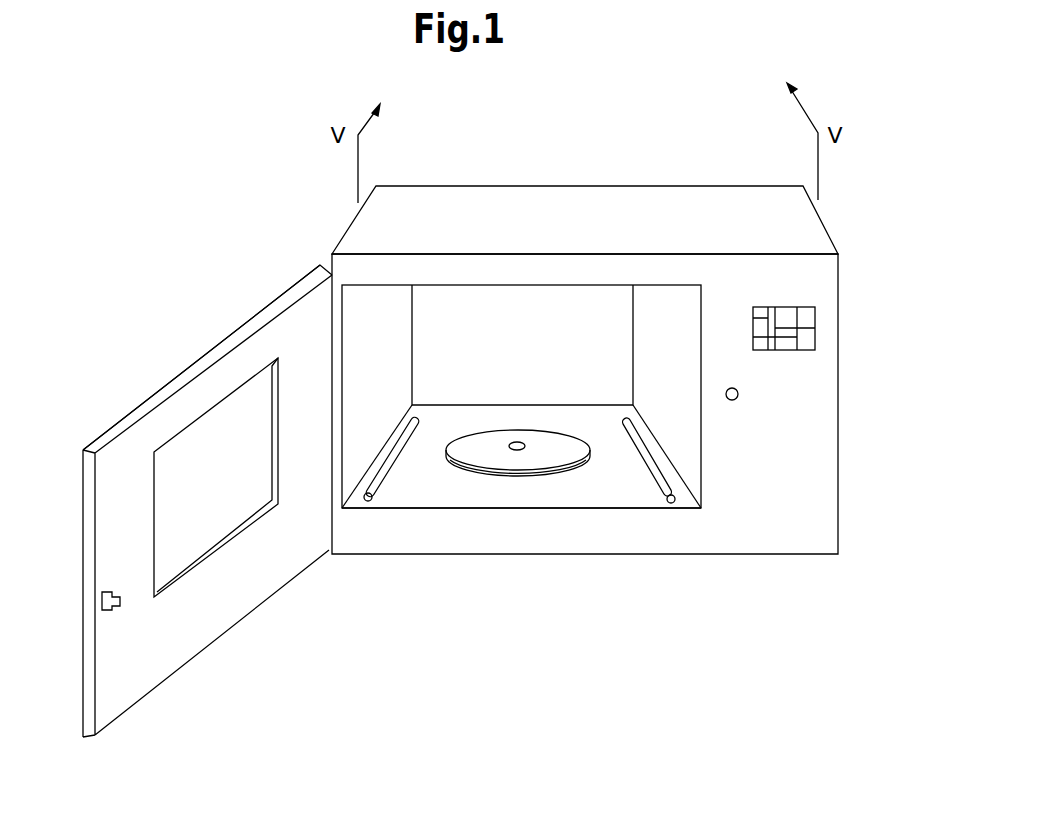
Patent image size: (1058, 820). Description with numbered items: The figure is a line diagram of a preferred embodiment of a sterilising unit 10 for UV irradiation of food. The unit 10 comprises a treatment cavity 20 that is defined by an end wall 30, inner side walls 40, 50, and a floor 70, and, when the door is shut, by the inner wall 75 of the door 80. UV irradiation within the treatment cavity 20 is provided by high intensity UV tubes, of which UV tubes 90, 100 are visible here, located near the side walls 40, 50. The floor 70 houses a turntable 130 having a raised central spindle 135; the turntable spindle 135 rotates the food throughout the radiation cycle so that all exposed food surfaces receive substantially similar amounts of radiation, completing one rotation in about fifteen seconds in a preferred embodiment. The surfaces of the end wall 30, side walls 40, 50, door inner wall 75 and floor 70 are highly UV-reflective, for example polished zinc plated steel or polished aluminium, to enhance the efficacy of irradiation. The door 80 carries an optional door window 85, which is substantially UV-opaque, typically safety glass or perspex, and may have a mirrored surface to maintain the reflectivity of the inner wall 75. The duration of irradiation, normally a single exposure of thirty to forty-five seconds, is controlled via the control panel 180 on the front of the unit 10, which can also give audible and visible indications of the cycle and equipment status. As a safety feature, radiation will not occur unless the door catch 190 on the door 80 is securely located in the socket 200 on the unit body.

The sterilising unit 10 is at (815, 377).
The treatment cavity 20 is at (472, 483).
The end wall 30 is at (467, 300).
The inner side wall 40 is at (367, 413).
The inner side wall 50 is at (667, 337).
The floor 70 is at (635, 488).
The inner wall of door 75 is at (233, 573).
The door 80 is at (217, 350).
The door window 85 is at (173, 497).
The UV tube 90 is at (430, 414).
The UV tube 100 is at (667, 485).
The turntable 130 is at (522, 460).
The raised central spindle 135 is at (519, 442).
The control panel 180 is at (807, 337).
The door catch 190 is at (118, 608).
The socket 200 is at (738, 393).